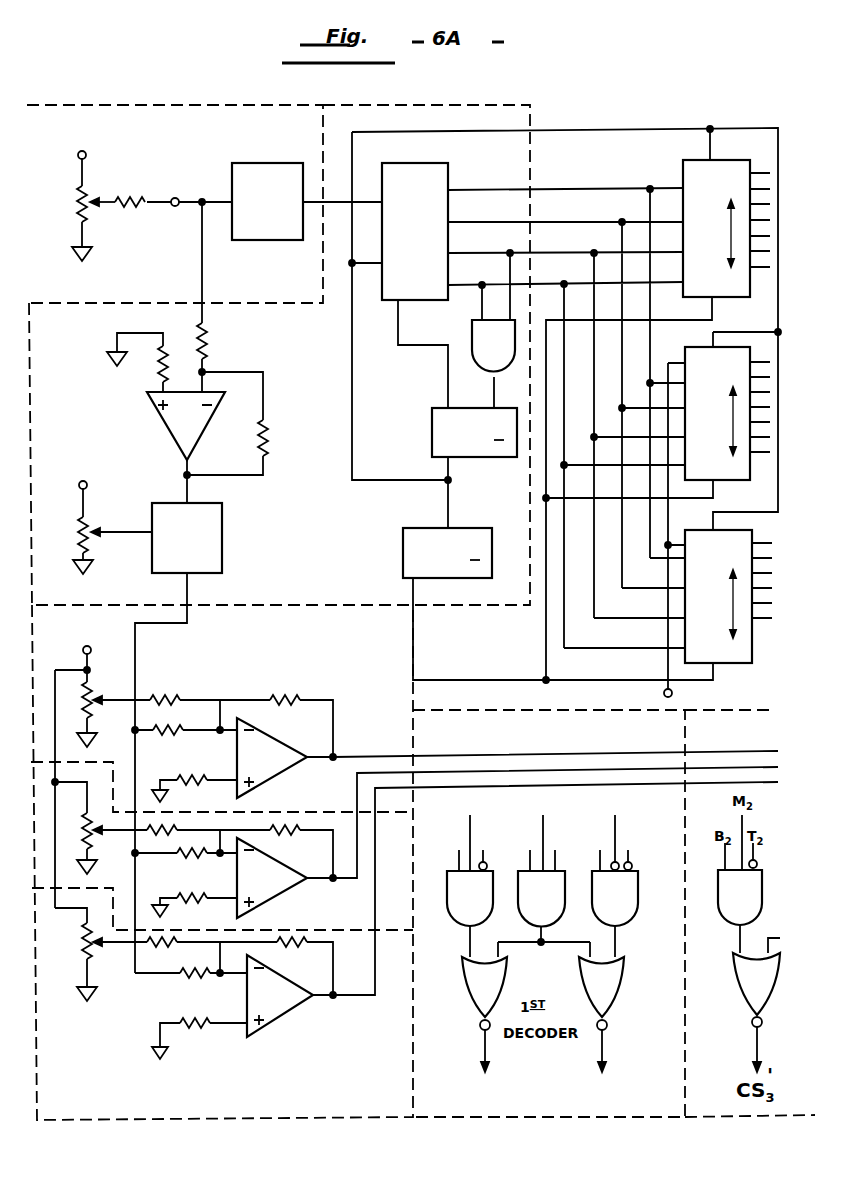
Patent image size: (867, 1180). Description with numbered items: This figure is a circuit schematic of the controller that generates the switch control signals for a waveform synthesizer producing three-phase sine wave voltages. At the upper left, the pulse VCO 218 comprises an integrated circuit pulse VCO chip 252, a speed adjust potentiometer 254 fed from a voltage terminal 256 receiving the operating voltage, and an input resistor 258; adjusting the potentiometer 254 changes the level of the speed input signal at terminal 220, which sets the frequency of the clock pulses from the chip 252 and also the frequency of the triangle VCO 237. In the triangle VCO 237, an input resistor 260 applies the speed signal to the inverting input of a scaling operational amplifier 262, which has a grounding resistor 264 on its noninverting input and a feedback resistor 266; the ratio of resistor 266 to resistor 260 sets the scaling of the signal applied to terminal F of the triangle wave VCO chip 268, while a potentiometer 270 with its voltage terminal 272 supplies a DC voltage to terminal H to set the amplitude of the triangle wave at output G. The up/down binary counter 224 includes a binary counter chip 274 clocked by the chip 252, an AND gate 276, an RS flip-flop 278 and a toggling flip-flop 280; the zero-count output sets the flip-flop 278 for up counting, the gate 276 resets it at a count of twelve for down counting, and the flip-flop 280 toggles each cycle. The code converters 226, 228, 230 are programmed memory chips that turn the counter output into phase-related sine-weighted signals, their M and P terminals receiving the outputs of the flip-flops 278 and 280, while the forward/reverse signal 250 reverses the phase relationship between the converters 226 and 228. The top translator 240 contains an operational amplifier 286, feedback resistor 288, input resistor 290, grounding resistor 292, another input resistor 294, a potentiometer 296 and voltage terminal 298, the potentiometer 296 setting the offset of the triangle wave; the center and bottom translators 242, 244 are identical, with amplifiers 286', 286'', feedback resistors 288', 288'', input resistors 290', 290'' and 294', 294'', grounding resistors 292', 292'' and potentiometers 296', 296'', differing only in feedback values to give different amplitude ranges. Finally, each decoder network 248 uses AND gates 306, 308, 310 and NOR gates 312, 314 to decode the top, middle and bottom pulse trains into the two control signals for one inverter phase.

The pulse VCO 218 is at (182, 143).
The terminal 220 is at (175, 197).
The up/down binary counter 224 is at (385, 128).
The code converter 226 is at (741, 665).
The code converter 228 is at (698, 344).
The code converter 230 is at (723, 160).
The triangle VCO 237 is at (275, 565).
The top translator circuit 240 is at (369, 641).
The center translator circuit 242 is at (342, 905).
The bottom translator circuit 244 is at (332, 1078).
The decoder network 248 is at (552, 743).
The phasing or forward/reverse signal 250 is at (664, 694).
The integrated circuit pulse VCO chip 252 is at (252, 164).
The speed adjust potentiometer 254 is at (89, 188).
The voltage terminal 256 is at (86, 151).
The input resistor 258 is at (133, 212).
The input resistor 260 is at (210, 341).
The scaling operational amplifier 262 is at (202, 432).
The grounding resistor 264 is at (155, 374).
The feedback resistor 266 is at (273, 440).
The triangle wave VCO chip 268 is at (222, 512).
The potentiometer 270 is at (76, 528).
The voltage terminal 272 is at (88, 486).
The integrated circuit binary counter chip 274 is at (447, 172).
The AND gate 276 is at (470, 333).
The RS flip-flop 278 is at (427, 416).
The toggling flip-flop 280 is at (403, 534).
The operational amplifier 286 is at (507, 757).
The operational amplifier 286' is at (507, 842).
The operational amplifier 286'' is at (512, 909).
The feedback resistor 288 is at (276, 700).
The feedback resistor 288' is at (276, 828).
The feedback resistor 288'' is at (281, 966).
The input resistor 290 is at (184, 703).
The input resistor 290' is at (184, 860).
The input resistor 290'' is at (182, 978).
The grounding resistor 292 is at (183, 772).
The grounding resistor 292' is at (200, 912).
The grounding resistor 292'' is at (199, 1045).
The input resistor 294 is at (183, 674).
The input resistor 294' is at (191, 812).
The input resistor 294'' is at (156, 961).
The potentiometer 296 is at (113, 702).
The potentiometer 296' is at (112, 803).
The potentiometer 296'' is at (87, 962).
The voltage terminal 298 is at (89, 650).
The AND gate 306 is at (469, 875).
The AND gate 308 is at (544, 875).
The AND gate 310 is at (614, 875).
The NOR gate 312 is at (484, 1032).
The NOR gate 314 is at (601, 1032).